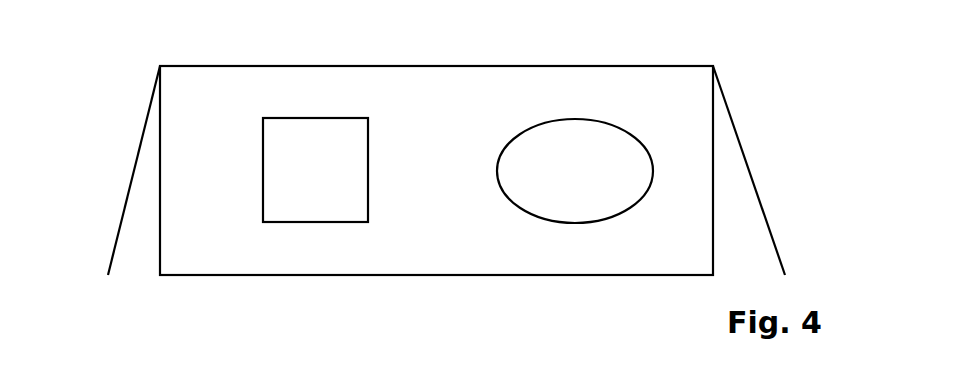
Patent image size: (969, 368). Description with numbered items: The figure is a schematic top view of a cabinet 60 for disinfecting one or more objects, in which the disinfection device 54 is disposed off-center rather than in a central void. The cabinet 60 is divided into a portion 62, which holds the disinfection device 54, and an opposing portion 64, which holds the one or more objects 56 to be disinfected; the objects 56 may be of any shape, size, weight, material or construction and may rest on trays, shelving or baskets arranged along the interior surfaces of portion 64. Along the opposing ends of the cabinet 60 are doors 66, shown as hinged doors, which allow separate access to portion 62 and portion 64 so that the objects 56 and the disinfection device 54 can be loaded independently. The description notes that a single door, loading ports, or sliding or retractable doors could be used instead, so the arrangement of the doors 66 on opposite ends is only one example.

The cabinet 60 is at (772, 77).
The doors 66 is at (126, 197).
The objects 56 is at (315, 170).
The disinfection device 54 is at (575, 171).
The portion 64 is at (283, 257).
The portion 62 is at (595, 248).